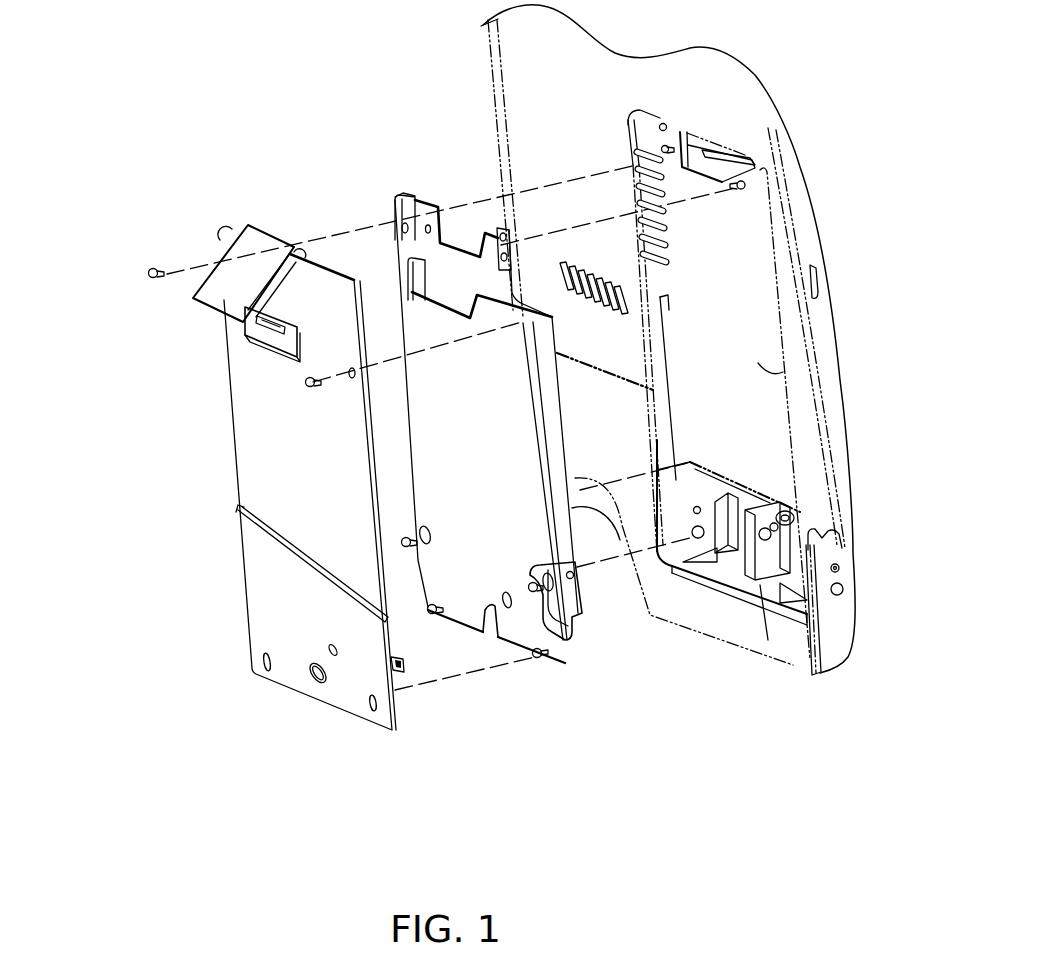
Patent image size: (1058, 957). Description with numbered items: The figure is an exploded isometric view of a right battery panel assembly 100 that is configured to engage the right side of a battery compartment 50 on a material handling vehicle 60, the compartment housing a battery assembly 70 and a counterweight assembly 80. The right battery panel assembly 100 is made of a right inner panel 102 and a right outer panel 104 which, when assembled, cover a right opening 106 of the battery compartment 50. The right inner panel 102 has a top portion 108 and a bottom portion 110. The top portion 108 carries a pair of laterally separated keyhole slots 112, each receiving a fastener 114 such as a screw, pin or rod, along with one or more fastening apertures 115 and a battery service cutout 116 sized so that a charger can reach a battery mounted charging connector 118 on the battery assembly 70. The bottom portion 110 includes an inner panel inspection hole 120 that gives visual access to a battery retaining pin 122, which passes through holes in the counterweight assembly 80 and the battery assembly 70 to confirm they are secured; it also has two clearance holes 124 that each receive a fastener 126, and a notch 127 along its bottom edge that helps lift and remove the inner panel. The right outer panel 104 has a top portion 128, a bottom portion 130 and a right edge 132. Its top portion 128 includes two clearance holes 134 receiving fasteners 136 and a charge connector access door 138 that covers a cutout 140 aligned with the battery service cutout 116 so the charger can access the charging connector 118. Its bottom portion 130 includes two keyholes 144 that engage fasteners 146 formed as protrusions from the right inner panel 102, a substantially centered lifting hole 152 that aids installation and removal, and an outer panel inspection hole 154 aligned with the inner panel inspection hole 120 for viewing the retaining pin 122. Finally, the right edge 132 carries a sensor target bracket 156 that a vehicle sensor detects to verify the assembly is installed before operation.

The battery compartment 50 is at (773, 230).
The material handling vehicle 60 is at (727, 78).
The battery assembly 70 is at (741, 311).
The counterweight assembly 80 is at (758, 582).
The right battery panel assembly 100 is at (301, 76).
The right inner panel 102 is at (403, 200).
The right outer panel 104 is at (225, 233).
The right opening 106 is at (758, 363).
The top portion 108 is at (336, 181).
The bottom portion 110 is at (558, 750).
The keyhole slot 112 is at (497, 230).
The fastener 114 is at (660, 150).
The fastening aperture 115 is at (400, 203).
The battery service cutout 116 is at (405, 287).
The battery mounted charging connector 118 is at (698, 147).
The inner panel inspection hole 120 is at (502, 608).
The battery retaining pin 122 is at (797, 520).
The clearance hole 124 is at (421, 533).
The fastener 126 is at (402, 542).
The notch 127 is at (484, 622).
The top portion 128 is at (100, 230).
The bottom portion 130 is at (288, 746).
The right edge 132 is at (396, 706).
The clearance hole 134 is at (350, 372).
The fastener 136 is at (148, 273).
The charge connector access door 138 is at (180, 315).
The cutout 140 is at (242, 342).
The keyhole 144 is at (370, 702).
The fastener 146 is at (432, 616).
The lifting hole 152 is at (318, 668).
The outer panel inspection hole 154 is at (331, 648).
The sensor target bracket 156 is at (403, 672).